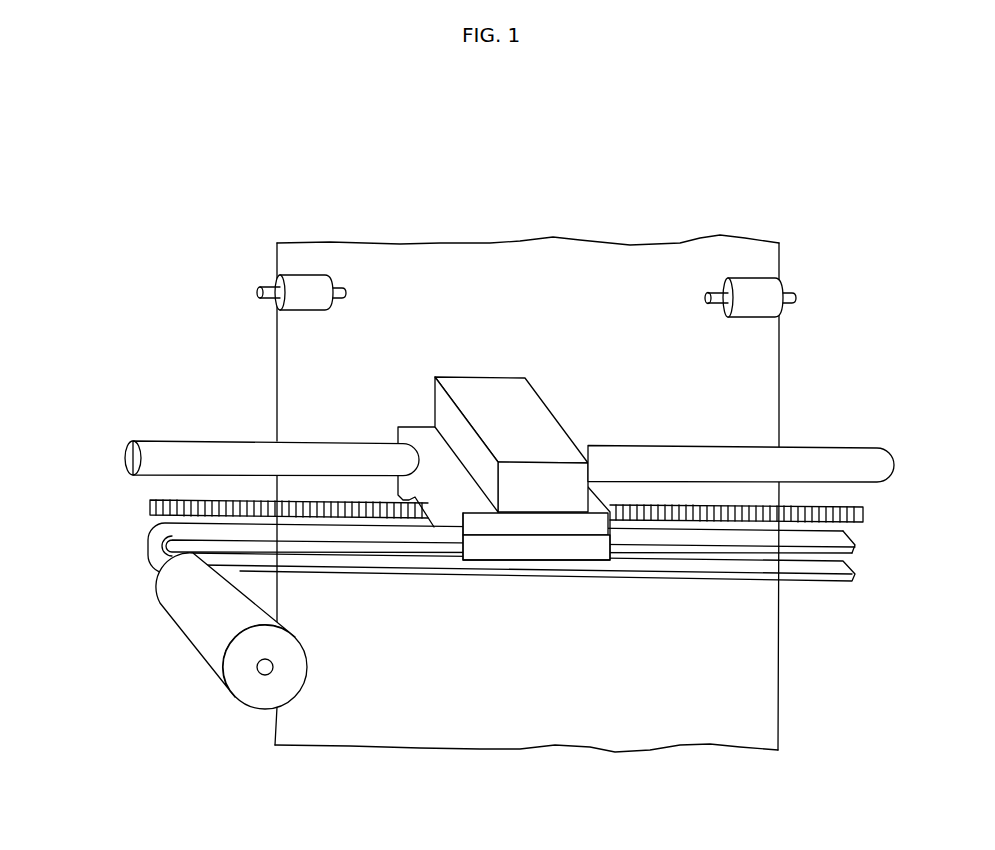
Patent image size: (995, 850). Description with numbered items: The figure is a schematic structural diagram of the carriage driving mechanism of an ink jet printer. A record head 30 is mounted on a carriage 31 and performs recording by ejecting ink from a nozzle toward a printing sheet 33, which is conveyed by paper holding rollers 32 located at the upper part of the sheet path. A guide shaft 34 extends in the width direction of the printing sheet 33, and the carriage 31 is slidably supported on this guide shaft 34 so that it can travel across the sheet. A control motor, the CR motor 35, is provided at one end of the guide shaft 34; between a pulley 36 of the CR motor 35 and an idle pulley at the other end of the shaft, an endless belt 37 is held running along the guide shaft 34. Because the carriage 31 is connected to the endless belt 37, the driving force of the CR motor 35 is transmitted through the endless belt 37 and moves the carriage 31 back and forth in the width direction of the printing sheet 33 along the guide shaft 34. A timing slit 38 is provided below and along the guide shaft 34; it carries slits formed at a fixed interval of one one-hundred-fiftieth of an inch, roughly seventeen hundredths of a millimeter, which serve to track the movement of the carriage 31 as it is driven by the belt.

The record head 30 is at (485, 390).
The carriage 31 is at (401, 427).
The paper holding rollers 32 is at (318, 283).
The printing sheet 33 is at (627, 275).
The guide shaft 34 is at (863, 460).
The control motor (CR motor) 35 is at (198, 630).
The pulley 36 is at (167, 562).
The endless belt 37 is at (825, 567).
The timing slit 38 is at (150, 507).